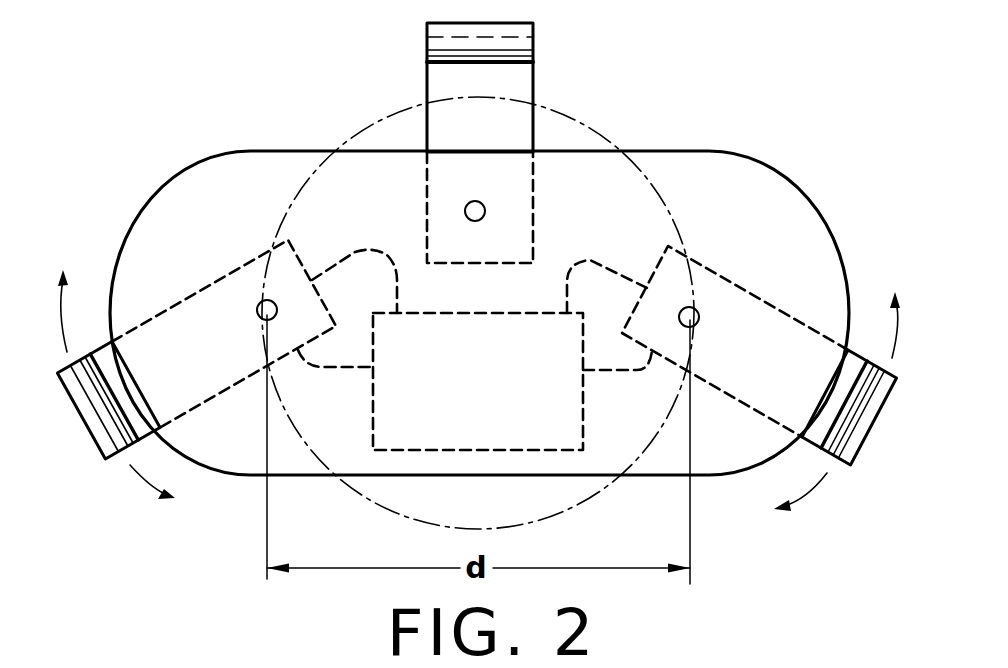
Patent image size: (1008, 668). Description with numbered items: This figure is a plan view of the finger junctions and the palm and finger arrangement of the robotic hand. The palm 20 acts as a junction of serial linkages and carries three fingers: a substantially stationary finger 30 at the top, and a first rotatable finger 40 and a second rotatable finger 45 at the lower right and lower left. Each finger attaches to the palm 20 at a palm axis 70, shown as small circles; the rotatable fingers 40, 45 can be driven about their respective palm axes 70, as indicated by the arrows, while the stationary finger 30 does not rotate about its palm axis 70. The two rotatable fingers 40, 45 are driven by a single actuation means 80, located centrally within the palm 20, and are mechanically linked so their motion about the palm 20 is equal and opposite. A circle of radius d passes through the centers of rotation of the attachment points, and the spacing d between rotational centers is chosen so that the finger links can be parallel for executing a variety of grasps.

The palm 20 is at (692, 170).
The substantially stationary finger 30 is at (524, 35).
The first rotatable finger 40 is at (867, 423).
The second rotatable finger 45 is at (83, 410).
The palm axis 70 is at (485, 209).
The actuation means 80 is at (548, 441).